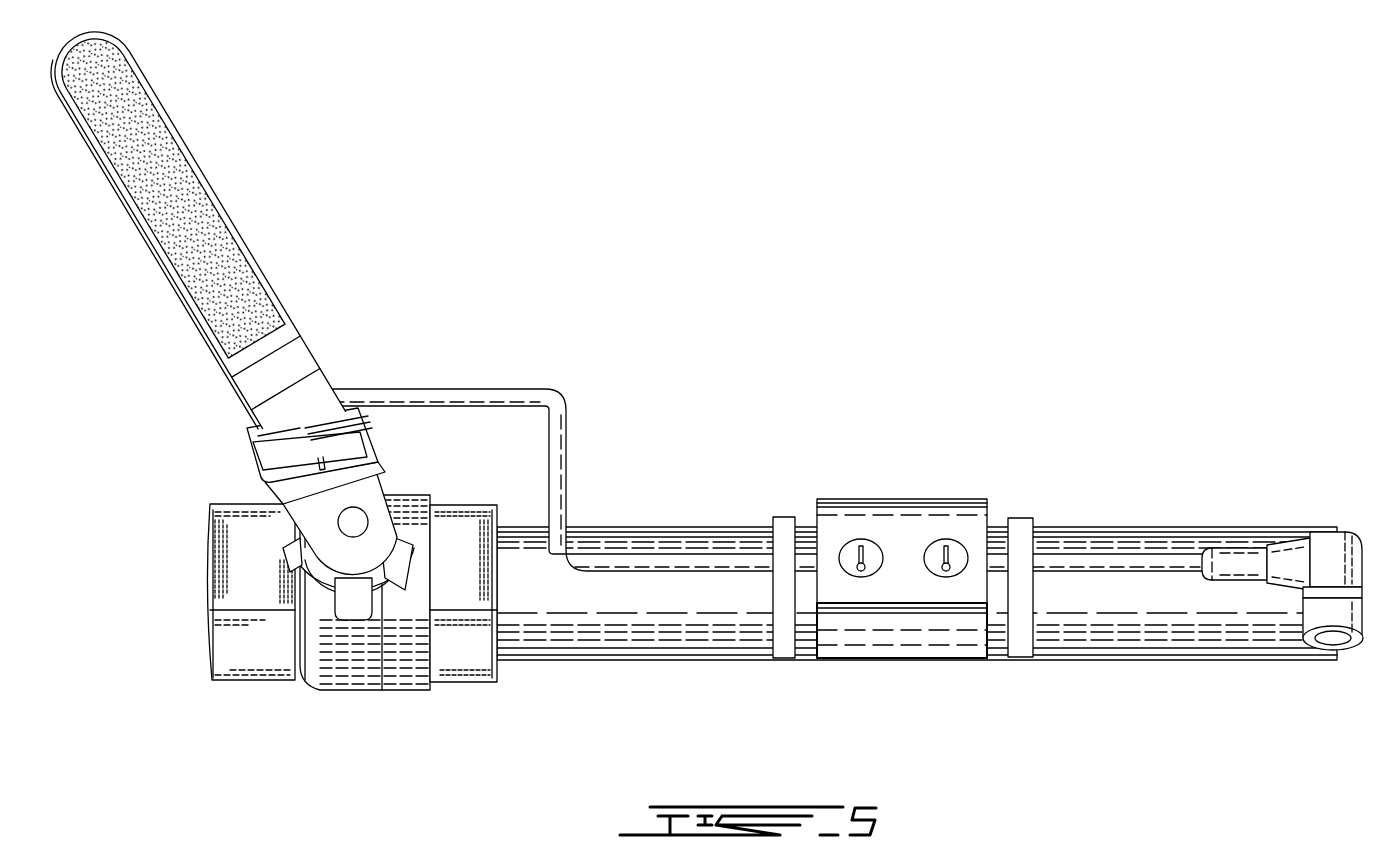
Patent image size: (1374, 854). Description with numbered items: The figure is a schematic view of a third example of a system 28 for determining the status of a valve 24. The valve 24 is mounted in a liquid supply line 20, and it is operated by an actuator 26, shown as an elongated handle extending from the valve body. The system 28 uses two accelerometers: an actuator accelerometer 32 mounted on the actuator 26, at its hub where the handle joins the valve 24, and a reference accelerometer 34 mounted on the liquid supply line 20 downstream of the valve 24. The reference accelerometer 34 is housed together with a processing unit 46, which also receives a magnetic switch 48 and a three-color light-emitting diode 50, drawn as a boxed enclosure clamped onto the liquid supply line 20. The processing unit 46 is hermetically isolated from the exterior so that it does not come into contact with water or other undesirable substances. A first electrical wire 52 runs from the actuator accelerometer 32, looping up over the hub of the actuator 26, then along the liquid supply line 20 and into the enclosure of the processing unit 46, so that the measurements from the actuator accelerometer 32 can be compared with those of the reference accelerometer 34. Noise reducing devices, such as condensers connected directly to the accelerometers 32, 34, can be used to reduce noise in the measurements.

The liquid supply line 20 is at (616, 527).
The valve 24 is at (393, 495).
The actuator 26 is at (140, 125).
The system 28 is at (942, 240).
The actuator accelerometer 32 is at (278, 444).
The reference accelerometer 34 is at (843, 540).
The processing unit 46 is at (930, 617).
The magnetic switch 48 is at (902, 630).
The three-color light-emitting diode 50 is at (902, 630).
The first electrical wire 52 is at (490, 382).